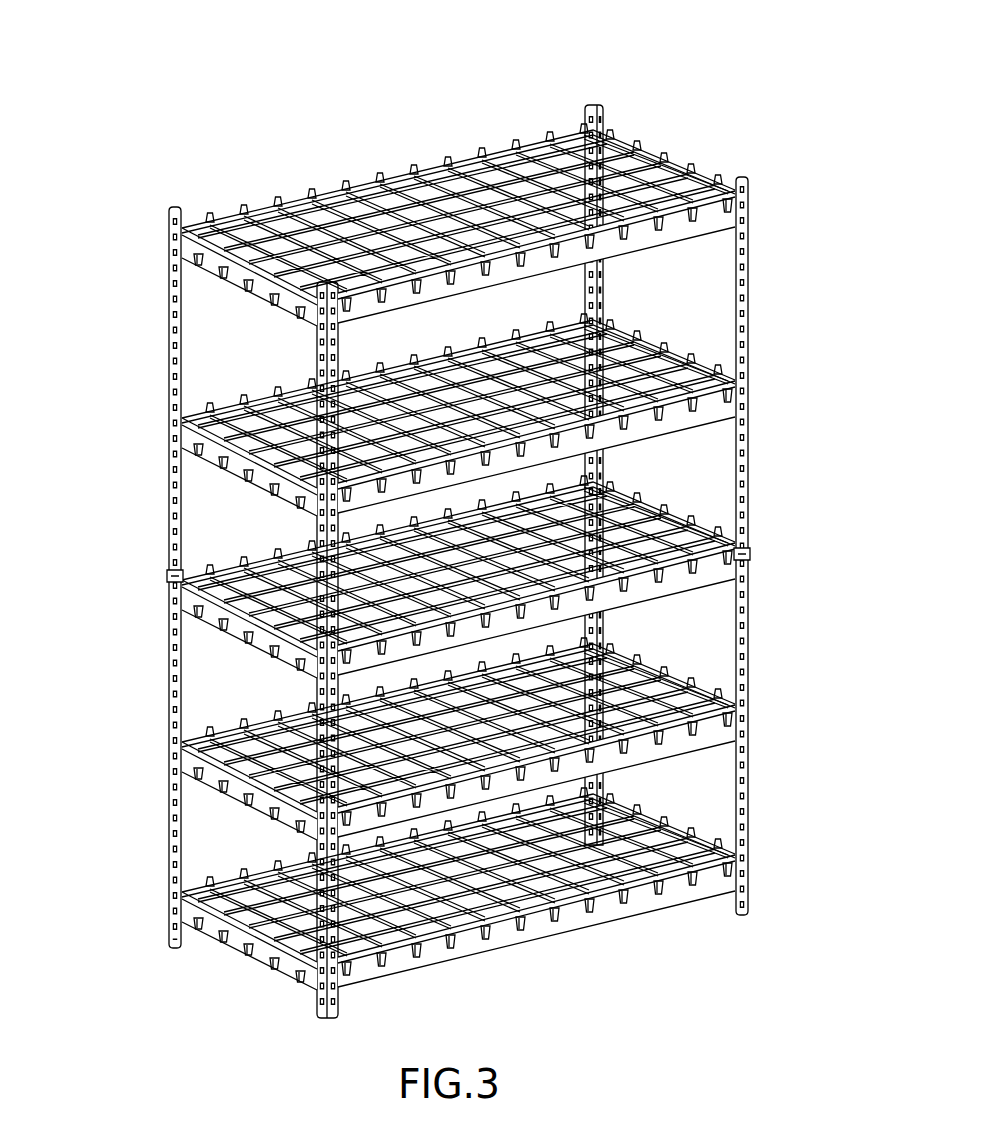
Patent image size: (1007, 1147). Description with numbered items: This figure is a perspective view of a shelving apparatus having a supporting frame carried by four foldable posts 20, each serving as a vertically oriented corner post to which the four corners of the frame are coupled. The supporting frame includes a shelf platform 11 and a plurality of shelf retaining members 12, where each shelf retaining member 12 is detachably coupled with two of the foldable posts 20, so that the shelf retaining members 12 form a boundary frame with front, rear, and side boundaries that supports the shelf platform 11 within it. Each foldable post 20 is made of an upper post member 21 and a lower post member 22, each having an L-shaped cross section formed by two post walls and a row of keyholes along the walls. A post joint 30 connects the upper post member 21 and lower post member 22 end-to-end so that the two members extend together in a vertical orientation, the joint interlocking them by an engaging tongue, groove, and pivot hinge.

The shelf platform 11 is at (623, 370).
The shelf retaining members 12 is at (708, 413).
The foldable posts 20 is at (442, 521).
The upper post member 21 is at (748, 490).
The lower post member 22 is at (748, 650).
The post joint 30 is at (750, 549).